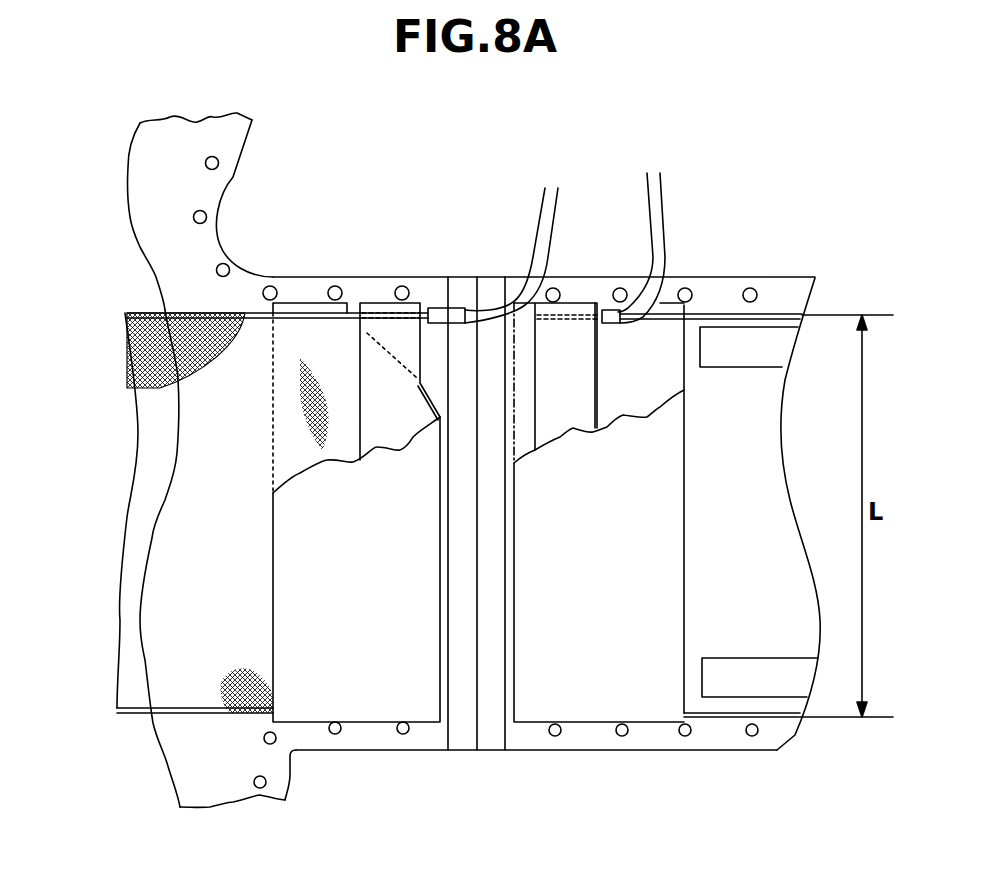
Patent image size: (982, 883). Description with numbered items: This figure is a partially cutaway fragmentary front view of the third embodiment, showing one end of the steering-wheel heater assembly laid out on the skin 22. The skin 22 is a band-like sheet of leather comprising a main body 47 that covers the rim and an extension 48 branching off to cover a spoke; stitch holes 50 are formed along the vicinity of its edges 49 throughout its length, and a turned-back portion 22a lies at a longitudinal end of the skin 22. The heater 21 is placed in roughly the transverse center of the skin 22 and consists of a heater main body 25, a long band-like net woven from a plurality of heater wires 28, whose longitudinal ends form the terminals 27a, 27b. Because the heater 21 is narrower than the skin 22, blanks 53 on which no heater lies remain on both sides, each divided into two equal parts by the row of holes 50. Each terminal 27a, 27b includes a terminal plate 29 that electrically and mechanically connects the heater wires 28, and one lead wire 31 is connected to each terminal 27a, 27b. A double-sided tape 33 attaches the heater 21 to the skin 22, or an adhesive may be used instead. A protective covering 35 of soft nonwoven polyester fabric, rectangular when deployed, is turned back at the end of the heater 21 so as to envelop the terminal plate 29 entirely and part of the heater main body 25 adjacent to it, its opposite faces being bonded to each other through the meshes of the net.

The heater 21 is at (127, 372).
The skin 22 is at (142, 170).
The turned-back portion 22a is at (497, 733).
The heater main body 25 is at (150, 423).
The terminal 27a is at (363, 327).
The terminal 27b is at (583, 323).
The heater wire 28 is at (127, 337).
The terminal plate 29 is at (390, 323).
The lead wire 31 is at (650, 200).
The double-sided tape 33 is at (770, 340).
The protective covering 35 is at (315, 708).
The main body 47 is at (292, 283).
The extension 48 is at (232, 142).
The edge 49 is at (743, 280).
The stitch hole 50 is at (203, 215).
The blank 53 is at (693, 285).